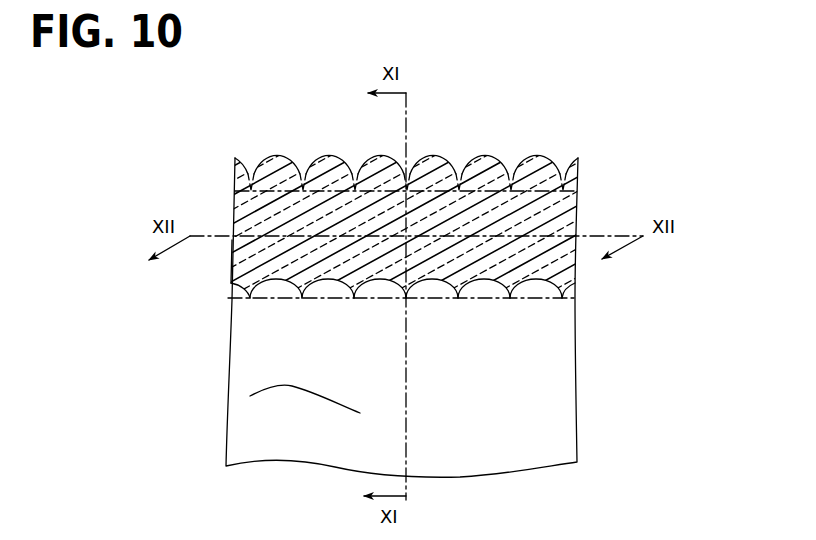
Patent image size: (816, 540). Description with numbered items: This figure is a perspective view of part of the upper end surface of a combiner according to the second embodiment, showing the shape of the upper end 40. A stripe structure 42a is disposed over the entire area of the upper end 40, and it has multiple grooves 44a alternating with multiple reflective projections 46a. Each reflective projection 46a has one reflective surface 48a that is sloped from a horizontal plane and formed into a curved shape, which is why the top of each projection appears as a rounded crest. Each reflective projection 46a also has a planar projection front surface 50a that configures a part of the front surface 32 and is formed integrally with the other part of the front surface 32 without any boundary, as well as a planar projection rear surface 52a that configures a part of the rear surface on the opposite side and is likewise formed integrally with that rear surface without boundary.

The front surface 32 is at (232, 408).
The upper end 40 is at (408, 226).
The stripe structure 42a is at (408, 224).
The grooves 44a is at (432, 298).
The reflective projections 46a is at (258, 213).
The reflective surface 48a is at (337, 170).
The projection front surface 50a is at (330, 296).
The projection rear surface 52a is at (562, 166).